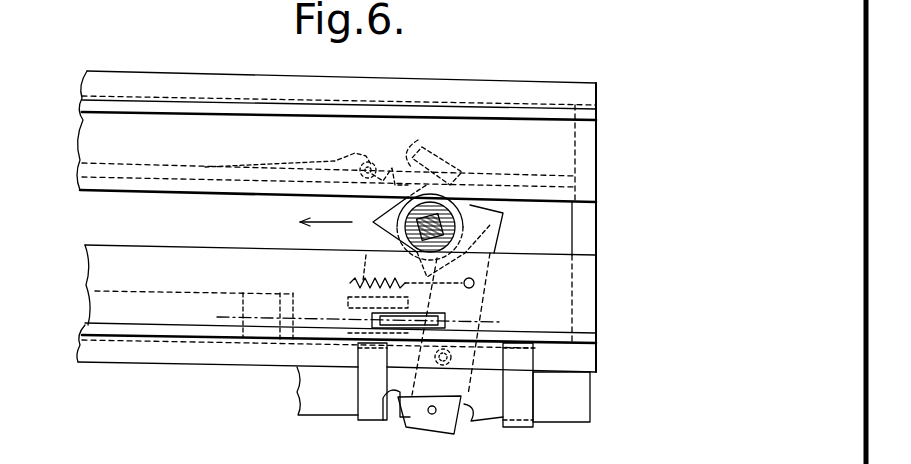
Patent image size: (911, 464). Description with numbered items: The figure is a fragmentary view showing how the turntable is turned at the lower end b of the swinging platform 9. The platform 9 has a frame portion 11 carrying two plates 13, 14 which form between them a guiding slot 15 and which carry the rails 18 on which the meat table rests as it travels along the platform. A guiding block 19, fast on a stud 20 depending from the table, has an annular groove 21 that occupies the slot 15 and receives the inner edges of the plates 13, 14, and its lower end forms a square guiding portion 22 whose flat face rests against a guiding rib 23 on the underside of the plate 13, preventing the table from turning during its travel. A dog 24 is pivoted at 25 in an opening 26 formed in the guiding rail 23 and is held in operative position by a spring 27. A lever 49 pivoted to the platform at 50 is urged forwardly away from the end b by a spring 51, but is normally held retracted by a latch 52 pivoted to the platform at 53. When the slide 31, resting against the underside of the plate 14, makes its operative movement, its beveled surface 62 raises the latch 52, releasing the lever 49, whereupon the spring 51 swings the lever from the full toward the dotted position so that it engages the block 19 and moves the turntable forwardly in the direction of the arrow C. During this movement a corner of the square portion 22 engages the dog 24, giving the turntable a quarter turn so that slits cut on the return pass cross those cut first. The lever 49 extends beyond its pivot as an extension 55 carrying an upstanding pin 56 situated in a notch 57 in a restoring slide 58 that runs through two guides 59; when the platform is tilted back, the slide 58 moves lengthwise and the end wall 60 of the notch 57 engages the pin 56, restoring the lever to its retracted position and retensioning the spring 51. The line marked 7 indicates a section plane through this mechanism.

The swinging or tiltable platform 9 is at (160, 72).
The plate 13 is at (208, 123).
The rails 18 is at (272, 106).
The lower end of the platform b is at (598, 83).
The guiding slot 15 is at (120, 208).
The guiding rib 23 is at (248, 186).
The spring 27 is at (345, 158).
The pivot 25 is at (361, 163).
The dog 24 is at (391, 166).
The opening 26 is at (428, 158).
The annular groove 21 is at (463, 207).
The stud 20 is at (445, 213).
The square guiding portion 22 is at (373, 222).
The arrow c C is at (326, 232).
The guiding block 19 is at (468, 216).
The lever 49 is at (503, 233).
The frame portion 11 is at (592, 241).
The spring 51 is at (366, 253).
The pivot 53 is at (352, 298).
The latch 52 is at (445, 318).
The section line 7 is at (351, 322).
The plate 14 is at (110, 273).
The slide 31 is at (110, 309).
The beveled surface 62 is at (280, 332).
The guides 59 is at (358, 422).
The restoring slide 58 is at (572, 409).
The notch 57 is at (392, 405).
The extension of the lever 55 is at (448, 417).
The pin 56 is at (430, 414).
The end wall of the notch 60 is at (473, 421).
The pivot 50 is at (448, 362).